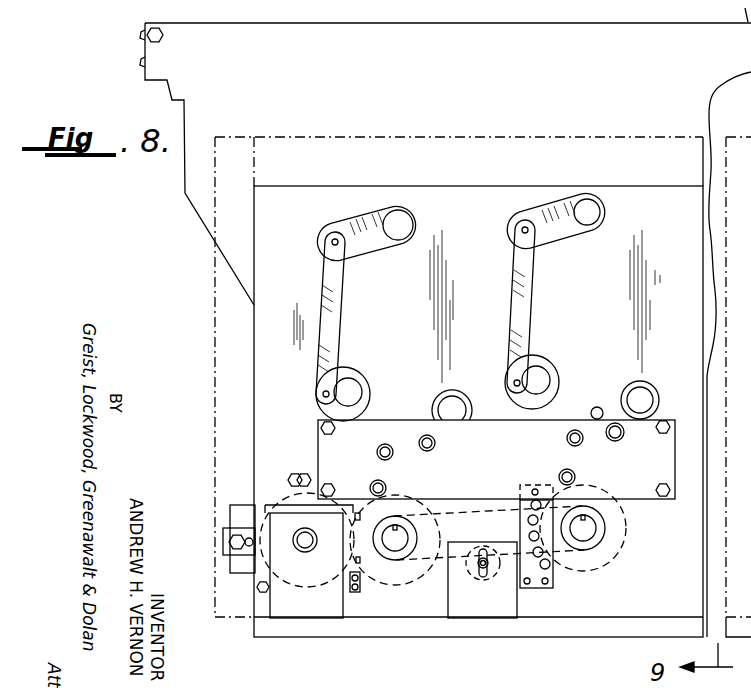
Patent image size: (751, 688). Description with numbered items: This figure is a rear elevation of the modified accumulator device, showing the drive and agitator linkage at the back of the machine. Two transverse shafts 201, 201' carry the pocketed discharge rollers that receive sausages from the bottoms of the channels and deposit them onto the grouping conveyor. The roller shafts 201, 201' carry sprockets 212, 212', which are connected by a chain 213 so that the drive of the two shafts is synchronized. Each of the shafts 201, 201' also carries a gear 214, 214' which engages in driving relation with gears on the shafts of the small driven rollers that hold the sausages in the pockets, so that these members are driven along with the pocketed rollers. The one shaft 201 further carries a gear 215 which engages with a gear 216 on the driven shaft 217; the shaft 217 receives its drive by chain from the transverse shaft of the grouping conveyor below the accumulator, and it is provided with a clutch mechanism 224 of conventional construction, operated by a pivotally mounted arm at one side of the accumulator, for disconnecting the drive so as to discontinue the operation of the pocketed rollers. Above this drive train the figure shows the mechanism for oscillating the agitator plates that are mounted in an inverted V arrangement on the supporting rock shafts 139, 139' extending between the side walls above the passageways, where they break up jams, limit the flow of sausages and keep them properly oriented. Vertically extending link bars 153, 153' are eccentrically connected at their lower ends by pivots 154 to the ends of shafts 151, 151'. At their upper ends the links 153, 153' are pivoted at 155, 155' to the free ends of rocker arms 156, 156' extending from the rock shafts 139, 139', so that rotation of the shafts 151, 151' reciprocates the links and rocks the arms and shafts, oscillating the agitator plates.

The supporting shaft 139 is at (613, 210).
The supporting shaft 139' is at (423, 221).
The shaft 151 is at (556, 381).
The shaft 151' is at (367, 392).
The link bar 153 is at (546, 306).
The link bar 153' is at (358, 318).
The pivot 154 is at (515, 382).
The pivot 155 is at (494, 247).
The pivot 155' is at (303, 254).
The rocker arm 156 is at (556, 232).
The rocker arm 156' is at (366, 246).
The transverse shaft 201 is at (624, 526).
The transverse shaft 201' is at (438, 534).
The sprocket 212 is at (611, 537).
The sprocket 212' is at (397, 549).
The chain 213 is at (490, 510).
The gear 214 is at (585, 544).
The gear 214' is at (399, 554).
The gear 215 is at (375, 578).
The gear 216 is at (280, 578).
The driven shaft 217 is at (303, 547).
The clutch mechanism 224 is at (260, 528).